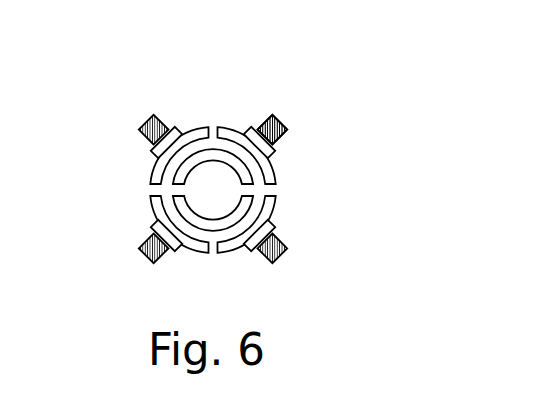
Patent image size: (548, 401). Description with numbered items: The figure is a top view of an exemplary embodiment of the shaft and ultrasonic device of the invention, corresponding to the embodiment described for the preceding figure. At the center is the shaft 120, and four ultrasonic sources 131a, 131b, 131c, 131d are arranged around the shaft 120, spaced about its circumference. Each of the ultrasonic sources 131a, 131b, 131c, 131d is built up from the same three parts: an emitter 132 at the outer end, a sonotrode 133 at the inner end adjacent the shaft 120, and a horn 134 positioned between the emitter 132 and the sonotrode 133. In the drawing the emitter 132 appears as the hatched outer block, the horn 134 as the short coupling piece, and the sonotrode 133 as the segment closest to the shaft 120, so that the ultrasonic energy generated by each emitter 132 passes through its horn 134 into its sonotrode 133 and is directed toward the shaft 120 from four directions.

The shaft 120 is at (192, 191).
The ultrasonic source 131a is at (283, 100).
The ultrasonic source 131b is at (137, 122).
The ultrasonic source 131c is at (138, 257).
The ultrasonic source 131d is at (295, 261).
The emitter 132 is at (265, 122).
The sonotrode 133 is at (266, 176).
The horn 134 is at (266, 142).